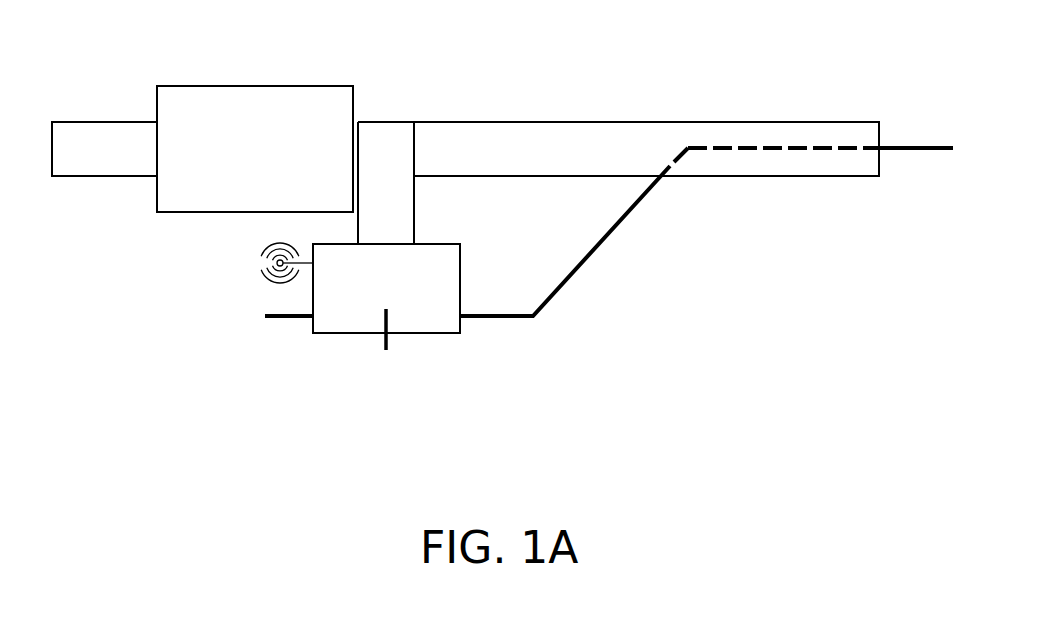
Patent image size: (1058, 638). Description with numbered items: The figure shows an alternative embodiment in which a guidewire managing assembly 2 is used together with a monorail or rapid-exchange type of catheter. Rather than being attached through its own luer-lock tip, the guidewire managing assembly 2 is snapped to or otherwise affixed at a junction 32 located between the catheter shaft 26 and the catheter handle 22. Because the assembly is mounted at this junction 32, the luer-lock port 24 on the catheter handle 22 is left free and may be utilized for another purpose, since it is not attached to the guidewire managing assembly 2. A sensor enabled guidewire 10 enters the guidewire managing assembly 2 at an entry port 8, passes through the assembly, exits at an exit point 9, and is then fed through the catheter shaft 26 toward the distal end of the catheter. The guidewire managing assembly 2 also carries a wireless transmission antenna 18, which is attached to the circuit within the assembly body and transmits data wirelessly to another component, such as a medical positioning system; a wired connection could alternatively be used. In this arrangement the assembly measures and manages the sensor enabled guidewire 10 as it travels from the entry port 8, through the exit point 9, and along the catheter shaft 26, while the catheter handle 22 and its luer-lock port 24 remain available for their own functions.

The guidewire managing assembly 2 is at (313, 362).
The entry port 8 is at (313, 318).
The exit point 9 is at (460, 318).
The sensor enabled guidewire 10 is at (278, 312).
The wireless transmission antenna 18 is at (305, 262).
The catheter handle 22 is at (227, 86).
The luer-lock port 24 is at (128, 177).
The catheter shaft 26 is at (633, 122).
The junction 32 is at (358, 122).